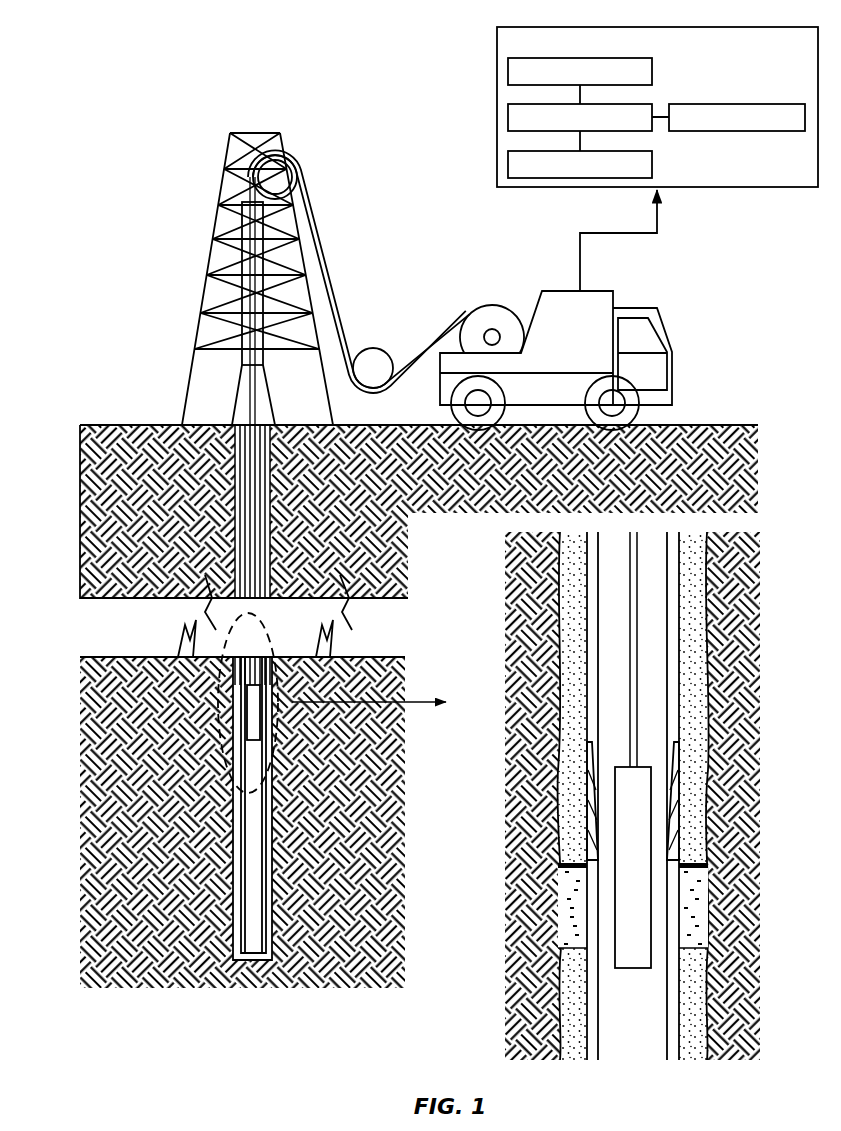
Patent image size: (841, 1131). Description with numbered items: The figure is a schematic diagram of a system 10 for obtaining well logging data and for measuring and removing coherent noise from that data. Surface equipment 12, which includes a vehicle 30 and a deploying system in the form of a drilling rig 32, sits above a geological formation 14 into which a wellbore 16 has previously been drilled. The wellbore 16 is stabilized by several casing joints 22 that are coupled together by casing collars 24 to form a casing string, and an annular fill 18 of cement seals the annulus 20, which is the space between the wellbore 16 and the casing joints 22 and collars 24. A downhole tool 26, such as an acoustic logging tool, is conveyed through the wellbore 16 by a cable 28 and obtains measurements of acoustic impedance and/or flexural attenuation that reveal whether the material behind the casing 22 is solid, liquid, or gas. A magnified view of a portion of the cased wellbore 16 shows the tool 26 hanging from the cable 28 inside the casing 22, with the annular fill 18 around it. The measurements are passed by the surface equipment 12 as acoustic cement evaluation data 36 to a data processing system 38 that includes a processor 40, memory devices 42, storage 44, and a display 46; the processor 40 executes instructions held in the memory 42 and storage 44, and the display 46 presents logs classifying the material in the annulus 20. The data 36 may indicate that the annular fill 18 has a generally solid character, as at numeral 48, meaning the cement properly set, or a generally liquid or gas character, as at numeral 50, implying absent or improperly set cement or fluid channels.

The system 10 is at (45, 951).
The surface equipment 12 is at (443, 210).
The geological formation 14 is at (92, 762).
The wellbore 16 is at (219, 471).
The annular fill 18 is at (219, 498).
The annulus 20 is at (219, 540).
The casing joints 22 is at (232, 887).
The casing collars 24 is at (285, 901).
The downhole tool 26 is at (241, 697).
The cable 28 is at (336, 271).
The vehicle 30 is at (556, 288).
The drilling rig 32 is at (211, 195).
The acoustic cement evaluation data 36 is at (658, 208).
The data processing system 38 is at (656, 28).
The processor 40 is at (633, 103).
The memory devices 42 is at (507, 72).
The storage 44 is at (645, 163).
The display 46 is at (740, 104).
The generally solid character 48 is at (698, 653).
The generally liquid or gas character 50 is at (694, 898).